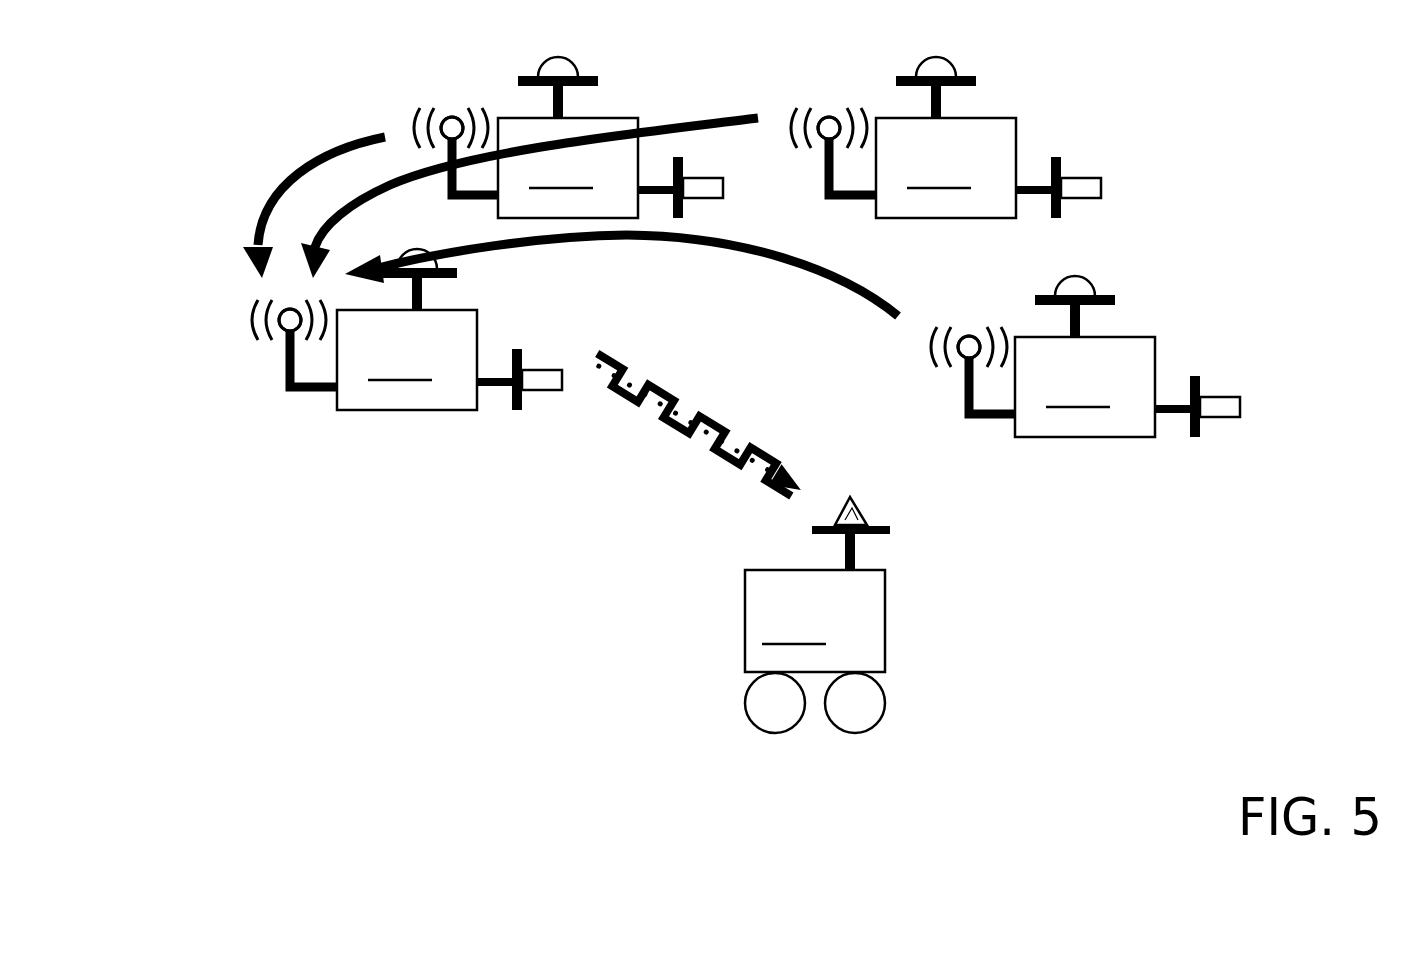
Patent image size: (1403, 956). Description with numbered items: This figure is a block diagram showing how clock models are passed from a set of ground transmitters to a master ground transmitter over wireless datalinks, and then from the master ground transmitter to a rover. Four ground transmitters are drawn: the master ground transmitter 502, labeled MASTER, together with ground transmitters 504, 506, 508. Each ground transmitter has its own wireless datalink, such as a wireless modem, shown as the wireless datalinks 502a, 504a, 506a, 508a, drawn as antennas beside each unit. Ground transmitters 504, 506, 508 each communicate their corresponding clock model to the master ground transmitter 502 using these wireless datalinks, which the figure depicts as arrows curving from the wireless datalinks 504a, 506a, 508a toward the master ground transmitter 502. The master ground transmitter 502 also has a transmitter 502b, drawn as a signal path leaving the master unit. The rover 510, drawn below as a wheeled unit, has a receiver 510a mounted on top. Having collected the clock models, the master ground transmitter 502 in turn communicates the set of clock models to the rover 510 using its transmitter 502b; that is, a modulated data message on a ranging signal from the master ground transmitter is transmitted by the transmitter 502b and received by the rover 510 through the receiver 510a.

The master ground transmitter 502 is at (407, 355).
The wireless datalink 502a is at (217, 280).
The transmitter 502b is at (563, 355).
The ground transmitter 504 is at (568, 137).
The wireless datalink 504a is at (435, 103).
The ground transmitter 506 is at (946, 137).
The wireless datalink 506a is at (827, 100).
The ground transmitter 508 is at (1085, 356).
The wireless datalink 508a is at (937, 384).
The rover 510 is at (817, 631).
The receiver 510a is at (878, 505).